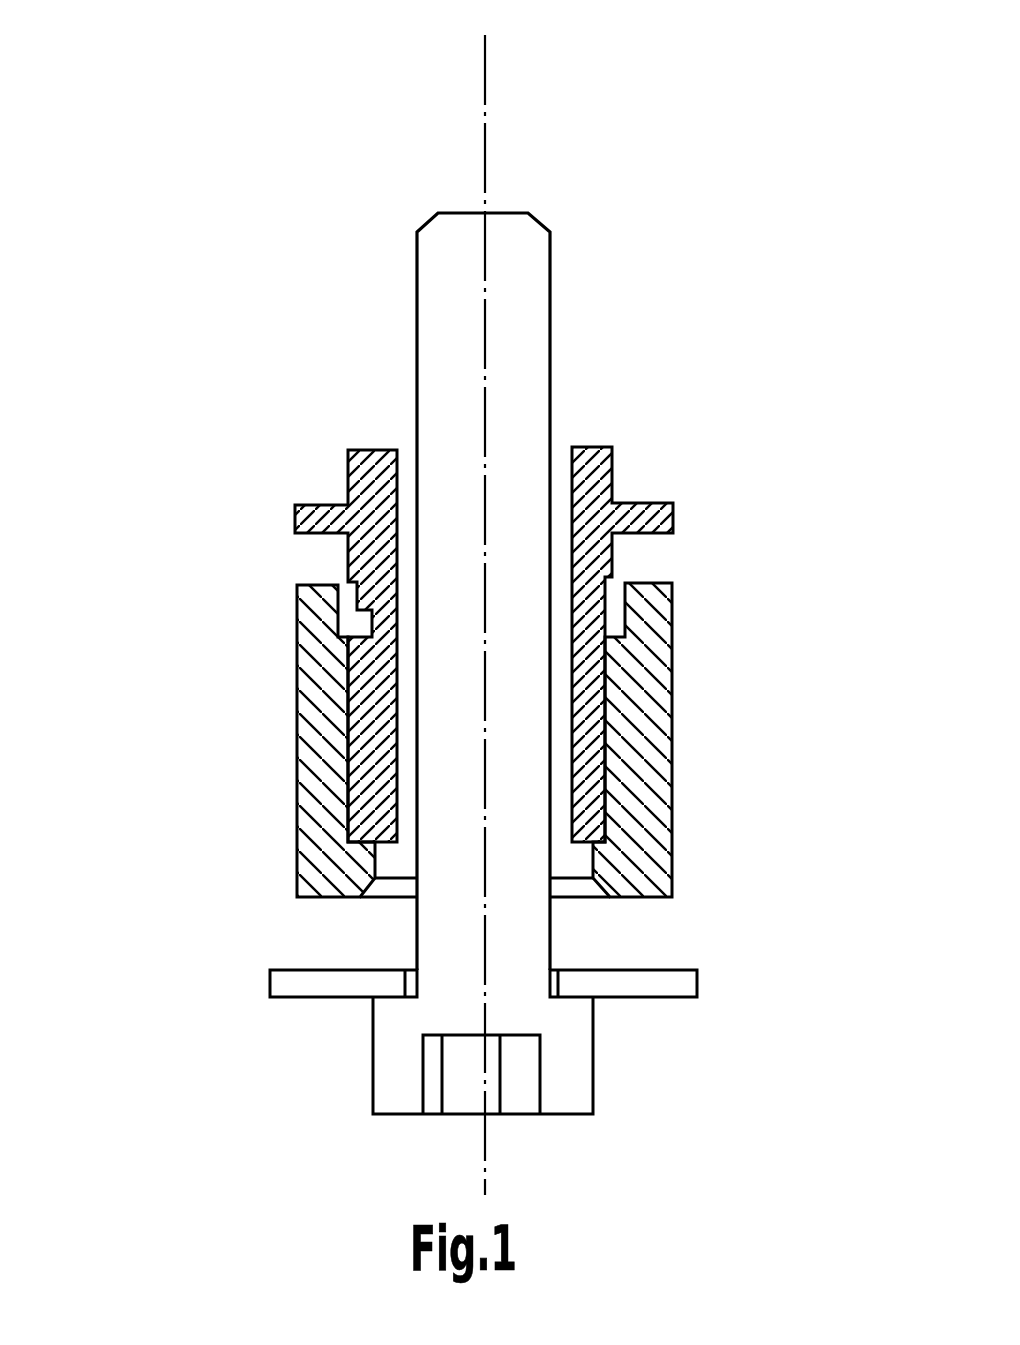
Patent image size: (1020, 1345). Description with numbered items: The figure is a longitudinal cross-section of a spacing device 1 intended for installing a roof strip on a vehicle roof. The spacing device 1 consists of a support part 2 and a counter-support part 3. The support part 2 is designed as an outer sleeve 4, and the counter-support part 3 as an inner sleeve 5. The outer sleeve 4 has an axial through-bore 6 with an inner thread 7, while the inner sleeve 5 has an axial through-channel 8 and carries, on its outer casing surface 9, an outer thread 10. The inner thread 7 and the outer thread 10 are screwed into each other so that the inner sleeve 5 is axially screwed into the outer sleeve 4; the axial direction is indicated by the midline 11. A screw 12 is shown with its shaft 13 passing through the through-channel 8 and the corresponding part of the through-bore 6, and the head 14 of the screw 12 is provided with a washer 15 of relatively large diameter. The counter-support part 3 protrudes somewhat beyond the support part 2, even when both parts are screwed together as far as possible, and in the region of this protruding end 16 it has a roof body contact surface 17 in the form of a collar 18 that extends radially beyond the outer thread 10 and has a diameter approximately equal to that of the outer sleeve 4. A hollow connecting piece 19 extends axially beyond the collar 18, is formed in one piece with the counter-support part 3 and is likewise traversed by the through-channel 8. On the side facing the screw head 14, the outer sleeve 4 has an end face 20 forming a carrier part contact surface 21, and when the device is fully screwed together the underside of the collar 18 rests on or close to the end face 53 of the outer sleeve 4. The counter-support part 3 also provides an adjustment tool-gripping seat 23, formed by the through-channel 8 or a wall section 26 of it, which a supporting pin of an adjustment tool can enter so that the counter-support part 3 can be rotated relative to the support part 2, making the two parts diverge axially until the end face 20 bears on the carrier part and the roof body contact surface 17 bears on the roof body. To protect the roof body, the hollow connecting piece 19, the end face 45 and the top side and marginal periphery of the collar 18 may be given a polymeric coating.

The spacing device 1 is at (750, 618).
The support part 2 is at (720, 761).
The counter-support part 3 is at (656, 550).
The outer sleeve 4 is at (625, 828).
The inner sleeve 5 is at (595, 565).
The axial through-bore 6 is at (583, 916).
The inner thread 7 is at (648, 850).
The axial through-channel 8 is at (558, 455).
The outer casing surface 9 is at (627, 640).
The outer thread 10 is at (620, 704).
The midline 11 is at (485, 80).
The screw 12 is at (558, 560).
The shaft 13 is at (527, 292).
The head 14 is at (573, 1070).
The washer 15 is at (680, 983).
The protruding end 16 is at (701, 581).
The roof body contact surface 17 is at (256, 574).
The collar 18 is at (288, 504).
The hollow connecting piece 19 is at (607, 447).
The end face 20 is at (318, 882).
The carrier part contact surface 21 is at (332, 892).
The adjustment tool-gripping seat 23 is at (586, 431).
The wall section 26 is at (237, 835).
The end face 45 is at (377, 447).
The end face 53 is at (320, 584).